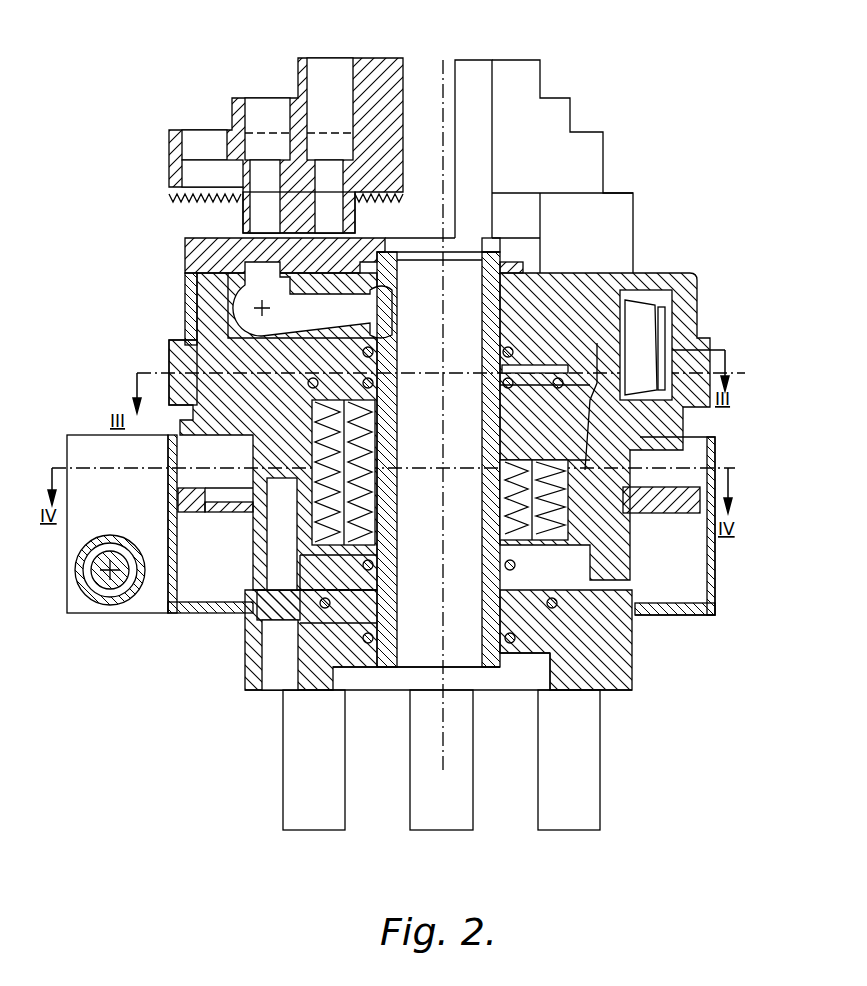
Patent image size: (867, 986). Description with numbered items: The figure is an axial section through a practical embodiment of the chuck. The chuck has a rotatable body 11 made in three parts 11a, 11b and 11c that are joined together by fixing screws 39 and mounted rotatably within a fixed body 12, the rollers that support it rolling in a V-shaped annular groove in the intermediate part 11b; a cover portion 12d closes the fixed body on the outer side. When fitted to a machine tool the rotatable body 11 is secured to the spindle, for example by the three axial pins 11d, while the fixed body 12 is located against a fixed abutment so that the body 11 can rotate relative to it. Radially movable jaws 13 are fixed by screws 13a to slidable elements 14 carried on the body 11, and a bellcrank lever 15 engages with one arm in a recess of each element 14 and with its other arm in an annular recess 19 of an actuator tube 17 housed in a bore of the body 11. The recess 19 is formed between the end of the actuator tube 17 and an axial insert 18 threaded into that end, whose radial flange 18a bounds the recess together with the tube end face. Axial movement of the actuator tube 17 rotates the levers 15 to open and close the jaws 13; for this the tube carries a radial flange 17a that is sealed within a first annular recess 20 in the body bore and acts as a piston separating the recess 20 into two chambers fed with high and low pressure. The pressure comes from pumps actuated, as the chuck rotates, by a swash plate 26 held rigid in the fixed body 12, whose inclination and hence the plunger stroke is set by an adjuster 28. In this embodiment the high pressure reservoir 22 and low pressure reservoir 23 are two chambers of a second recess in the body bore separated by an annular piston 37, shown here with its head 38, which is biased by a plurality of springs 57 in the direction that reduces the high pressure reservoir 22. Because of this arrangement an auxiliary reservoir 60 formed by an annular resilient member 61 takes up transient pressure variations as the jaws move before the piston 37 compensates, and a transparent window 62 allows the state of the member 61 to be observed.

The rotatable body 11 is at (190, 300).
The first part of rotatable body 11a is at (218, 330).
The intermediate part of rotatable body 11b is at (610, 590).
The third part of rotatable body 11c is at (623, 652).
The axial pins 11d is at (315, 797).
The fixed body 12 is at (76, 600).
The lateral housing cover 12d is at (697, 608).
The jaws 13 is at (370, 95).
The screws 13a is at (275, 148).
The slidable elements 14 is at (205, 253).
The bellcrank lever 15 is at (215, 278).
The actuator tube 17 is at (388, 545).
The radial flange 17a is at (338, 612).
The axial insert 18 is at (402, 268).
The radial flange of axial insert 18a is at (483, 270).
The annular recess 19 is at (497, 325).
The first annular recess 20 is at (340, 620).
The high pressure reservoir 22 is at (548, 370).
The low pressure reservoir 23 is at (525, 520).
The swash plate 26 is at (207, 510).
The adjuster 28 is at (122, 603).
The annular piston 37 is at (515, 442).
The piston 38 is at (560, 435).
The fixing screws 39 is at (250, 690).
The springs 57 is at (532, 500).
The auxiliary reservoir 60 is at (640, 320).
The annular resilient member 61 is at (660, 340).
The transparent window 62 is at (663, 338).